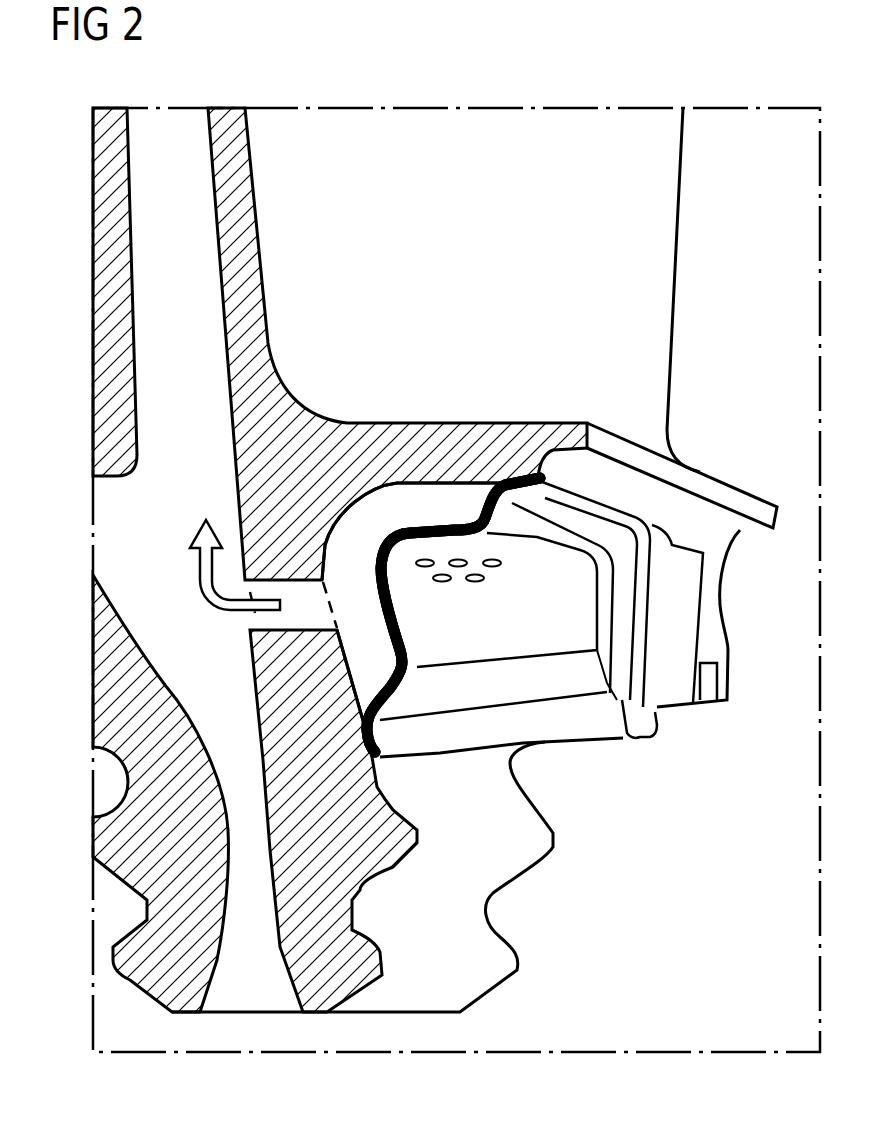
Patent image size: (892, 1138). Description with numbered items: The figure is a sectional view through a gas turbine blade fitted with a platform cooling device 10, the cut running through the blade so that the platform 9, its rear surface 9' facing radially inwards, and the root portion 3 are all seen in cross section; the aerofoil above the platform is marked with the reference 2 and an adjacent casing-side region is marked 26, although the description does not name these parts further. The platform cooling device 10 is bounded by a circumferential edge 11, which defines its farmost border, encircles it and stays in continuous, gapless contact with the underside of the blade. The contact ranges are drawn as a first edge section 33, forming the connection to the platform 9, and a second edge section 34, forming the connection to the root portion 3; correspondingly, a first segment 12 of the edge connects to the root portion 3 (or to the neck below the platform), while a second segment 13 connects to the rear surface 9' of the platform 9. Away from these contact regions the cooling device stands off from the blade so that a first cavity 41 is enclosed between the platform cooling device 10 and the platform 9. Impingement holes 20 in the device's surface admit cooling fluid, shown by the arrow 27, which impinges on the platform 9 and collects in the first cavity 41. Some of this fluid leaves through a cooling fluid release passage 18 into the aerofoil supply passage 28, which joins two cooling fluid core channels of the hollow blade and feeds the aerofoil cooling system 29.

The turbine vane 2 is at (636, 223).
The root portion 3 is at (337, 962).
The platform 9 is at (682, 475).
The rear surface 9' is at (453, 558).
The platform cooling device 10 is at (643, 587).
The circumferential edge 11 is at (615, 540).
The first segment 12 is at (387, 735).
The second segment 13 is at (537, 503).
The cooling fluid release passage 18 is at (265, 618).
The impingement holes 20 is at (492, 566).
The casing wall 26 is at (140, 512).
The cooling fluid flow 27 is at (207, 572).
The aerofoil supply passage 28 is at (256, 817).
The aerofoil cooling system 29 is at (194, 217).
The first edge section 33 is at (527, 480).
The second edge section 34 is at (362, 737).
The first cavity 41 is at (362, 517).